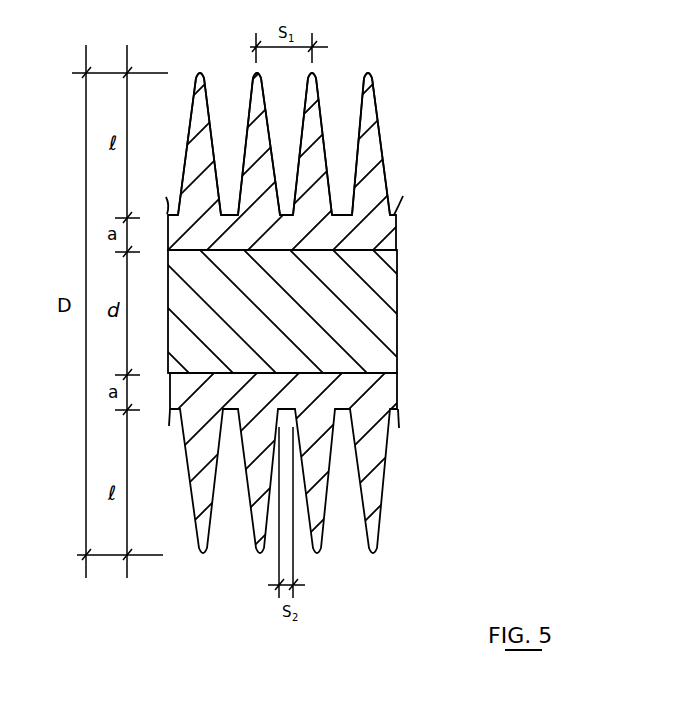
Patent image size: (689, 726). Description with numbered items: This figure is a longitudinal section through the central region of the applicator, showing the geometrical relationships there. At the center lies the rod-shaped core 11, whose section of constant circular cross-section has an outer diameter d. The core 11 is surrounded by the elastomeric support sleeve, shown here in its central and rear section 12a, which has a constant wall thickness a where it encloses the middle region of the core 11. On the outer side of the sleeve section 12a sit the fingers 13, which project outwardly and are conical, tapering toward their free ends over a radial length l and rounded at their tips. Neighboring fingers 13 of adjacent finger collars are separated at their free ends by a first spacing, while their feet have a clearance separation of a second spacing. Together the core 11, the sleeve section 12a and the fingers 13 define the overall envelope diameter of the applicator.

The core 11 is at (371, 312).
The central and rear section of the support sleeve 12a is at (366, 234).
The fingers 13 is at (362, 149).